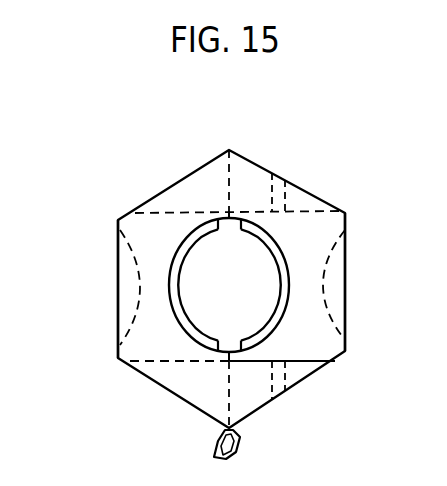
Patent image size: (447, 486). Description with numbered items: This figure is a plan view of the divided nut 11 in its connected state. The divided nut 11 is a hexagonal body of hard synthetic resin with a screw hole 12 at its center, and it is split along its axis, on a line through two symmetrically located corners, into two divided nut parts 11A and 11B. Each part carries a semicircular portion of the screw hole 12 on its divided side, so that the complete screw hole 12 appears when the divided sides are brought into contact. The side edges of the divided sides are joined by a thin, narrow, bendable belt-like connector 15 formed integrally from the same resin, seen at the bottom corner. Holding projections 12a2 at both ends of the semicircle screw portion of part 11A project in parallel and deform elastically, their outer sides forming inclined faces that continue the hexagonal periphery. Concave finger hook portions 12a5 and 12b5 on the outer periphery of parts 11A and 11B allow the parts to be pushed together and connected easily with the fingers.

The divided nut 11 is at (312, 188).
The divided nut part 11A is at (118, 360).
The divided nut part 11B is at (347, 352).
The screw hole 12 is at (263, 293).
The holding projection 12a2 is at (247, 177).
The finger hook portion 12a5 is at (128, 294).
The finger hook portion 12b5 is at (340, 303).
The belt-like connector 15 is at (234, 452).